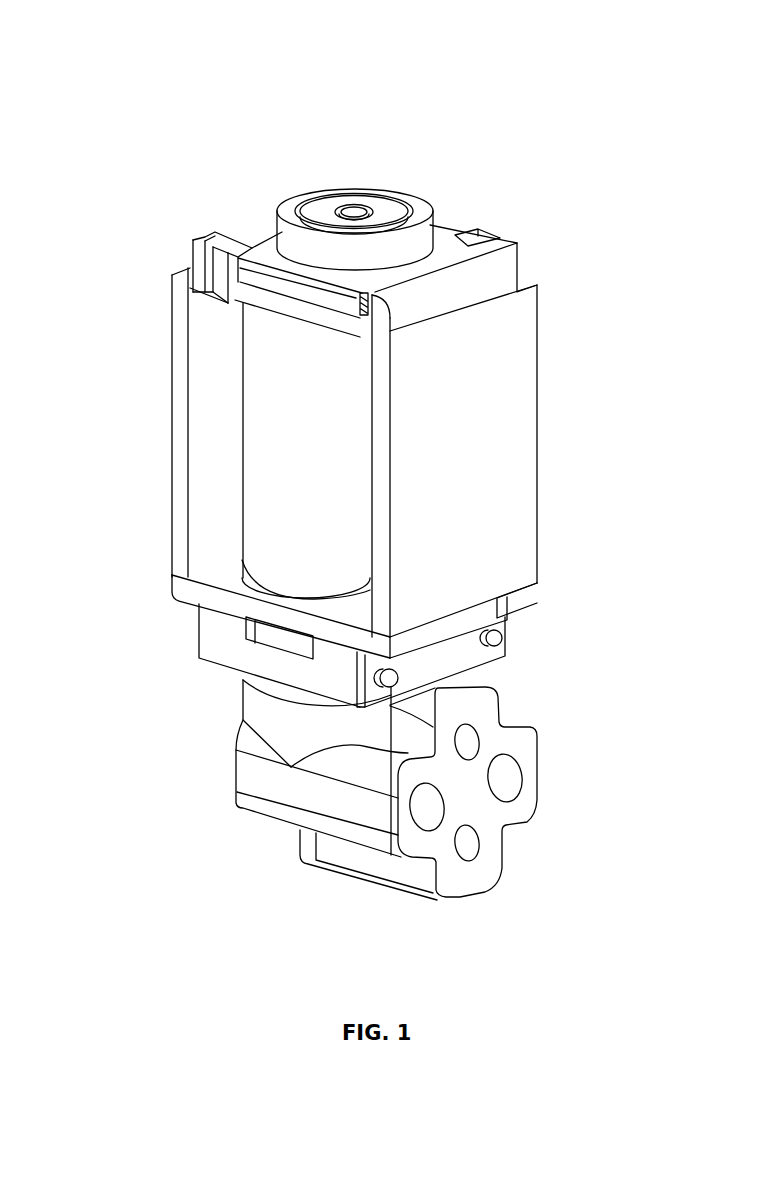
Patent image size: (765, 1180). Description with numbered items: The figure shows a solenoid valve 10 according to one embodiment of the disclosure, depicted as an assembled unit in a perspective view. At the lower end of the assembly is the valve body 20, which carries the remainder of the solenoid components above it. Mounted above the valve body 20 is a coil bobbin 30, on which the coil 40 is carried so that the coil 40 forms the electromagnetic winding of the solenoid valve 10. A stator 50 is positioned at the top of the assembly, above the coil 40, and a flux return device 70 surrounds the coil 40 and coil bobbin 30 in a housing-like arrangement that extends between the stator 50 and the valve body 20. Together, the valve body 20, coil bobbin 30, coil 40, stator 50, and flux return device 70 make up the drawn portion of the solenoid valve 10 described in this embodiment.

The solenoid valve 10 is at (222, 153).
The valve body 20 is at (517, 737).
The coil bobbin 30 is at (243, 559).
The coil 40 is at (277, 437).
The stator 50 is at (387, 208).
The flux return device 70 is at (480, 480).